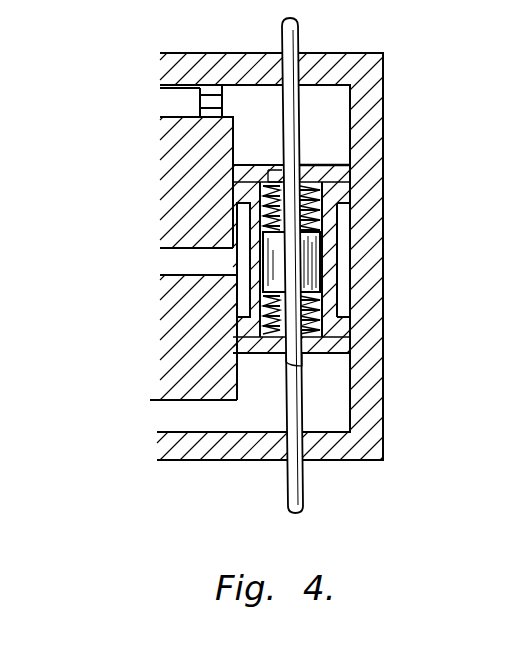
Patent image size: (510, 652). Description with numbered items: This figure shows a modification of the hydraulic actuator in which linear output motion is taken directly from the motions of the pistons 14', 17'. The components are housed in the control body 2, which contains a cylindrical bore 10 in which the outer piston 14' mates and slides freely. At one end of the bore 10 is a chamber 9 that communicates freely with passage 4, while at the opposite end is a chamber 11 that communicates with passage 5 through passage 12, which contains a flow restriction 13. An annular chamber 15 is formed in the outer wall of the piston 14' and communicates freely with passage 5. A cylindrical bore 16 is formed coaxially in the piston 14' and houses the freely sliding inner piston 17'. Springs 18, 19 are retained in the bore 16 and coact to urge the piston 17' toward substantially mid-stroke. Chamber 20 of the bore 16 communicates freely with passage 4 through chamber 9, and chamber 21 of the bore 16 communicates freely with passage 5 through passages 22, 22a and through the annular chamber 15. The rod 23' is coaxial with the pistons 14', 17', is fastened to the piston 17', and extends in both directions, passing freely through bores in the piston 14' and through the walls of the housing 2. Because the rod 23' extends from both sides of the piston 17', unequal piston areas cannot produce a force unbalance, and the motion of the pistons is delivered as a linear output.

The control body 2 is at (383, 92).
The passage 4 is at (160, 416).
The passage 5 is at (170, 263).
The chamber 9 is at (342, 424).
The cylindrical bore 10 is at (237, 390).
The chamber 11 is at (338, 116).
The passage 12 is at (176, 100).
The flow restriction 13 is at (178, 108).
The piston 14' is at (369, 140).
The annular chamber 15 is at (343, 275).
The cylindrical bore 16 is at (337, 290).
The piston 17' is at (351, 258).
The spring 18 is at (348, 340).
The spring 19 is at (352, 180).
The chamber 20 is at (304, 355).
The chamber 21 is at (284, 178).
The passage 22 is at (248, 205).
The passage 22a is at (345, 212).
The rod 23' is at (325, 267).